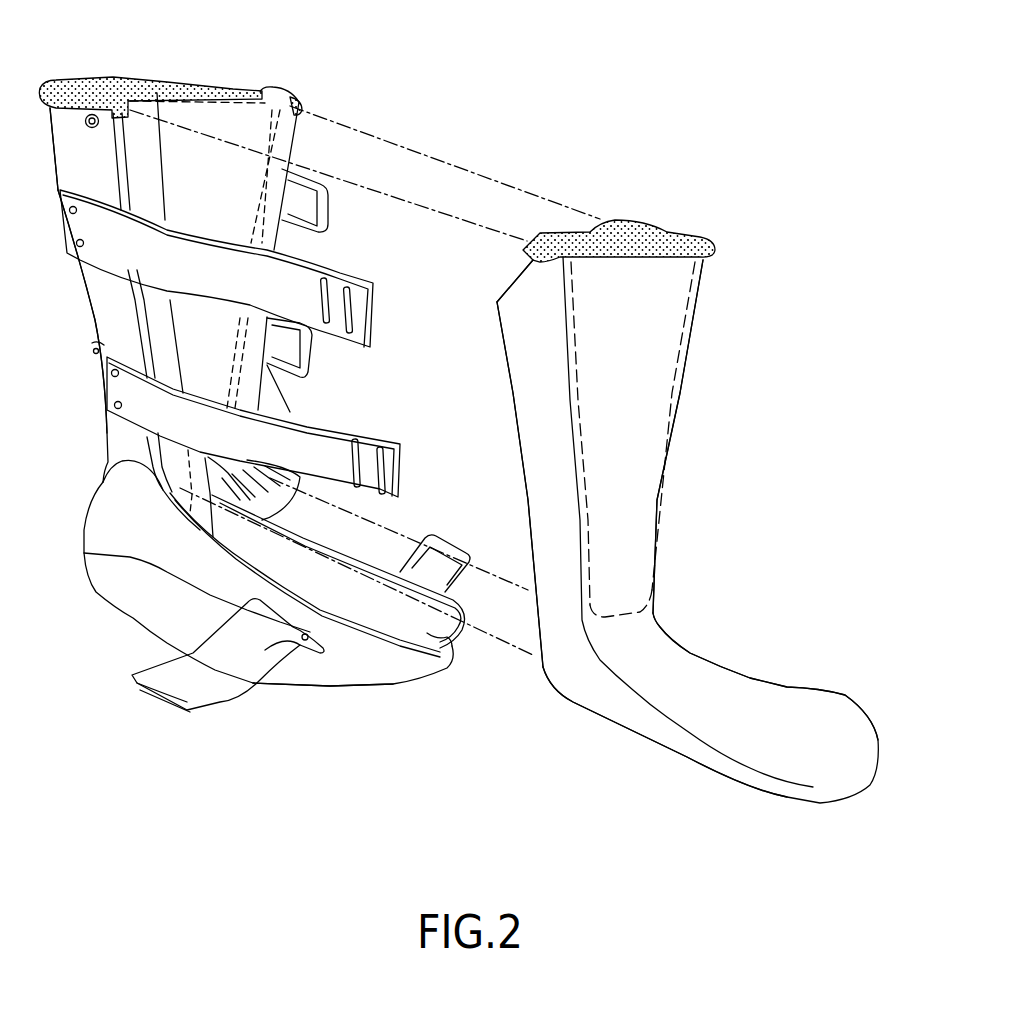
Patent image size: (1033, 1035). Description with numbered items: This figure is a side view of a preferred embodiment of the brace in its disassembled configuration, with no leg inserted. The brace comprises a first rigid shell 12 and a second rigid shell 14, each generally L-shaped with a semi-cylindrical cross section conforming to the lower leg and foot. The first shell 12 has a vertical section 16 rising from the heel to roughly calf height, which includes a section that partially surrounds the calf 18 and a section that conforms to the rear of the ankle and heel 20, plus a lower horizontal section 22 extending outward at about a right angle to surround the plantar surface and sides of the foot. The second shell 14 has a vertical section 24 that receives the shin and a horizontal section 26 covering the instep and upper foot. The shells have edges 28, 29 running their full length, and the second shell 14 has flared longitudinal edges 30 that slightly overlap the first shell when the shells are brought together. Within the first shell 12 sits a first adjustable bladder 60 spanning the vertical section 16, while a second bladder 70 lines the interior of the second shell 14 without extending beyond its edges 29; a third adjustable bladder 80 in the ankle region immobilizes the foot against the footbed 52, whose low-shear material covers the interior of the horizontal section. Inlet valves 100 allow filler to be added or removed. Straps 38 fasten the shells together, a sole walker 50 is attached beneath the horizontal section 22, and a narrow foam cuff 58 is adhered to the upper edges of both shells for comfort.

The first rigid shell 12 is at (58, 187).
The second rigid shell 14 is at (703, 301).
The vertical section 16 is at (104, 343).
The calf section 18 is at (66, 213).
The ankle and heel section 20 is at (100, 483).
The horizontal section 22 is at (137, 556).
The vertical section 24 is at (662, 473).
The horizontal section 26 is at (688, 678).
The edges 28 is at (318, 537).
The longitudinal edges 29 is at (497, 323).
The flared longitudinal edges 30 is at (513, 393).
The straps 38 is at (114, 268).
The sole walker 50 is at (330, 687).
The footbed 52 is at (432, 634).
The foam cuff 58 is at (44, 88).
The first adjustable bladder 60 is at (278, 90).
The second bladder 70 is at (643, 367).
The third adjustable bladder 80 is at (277, 390).
The inlet valve 100 is at (86, 124).